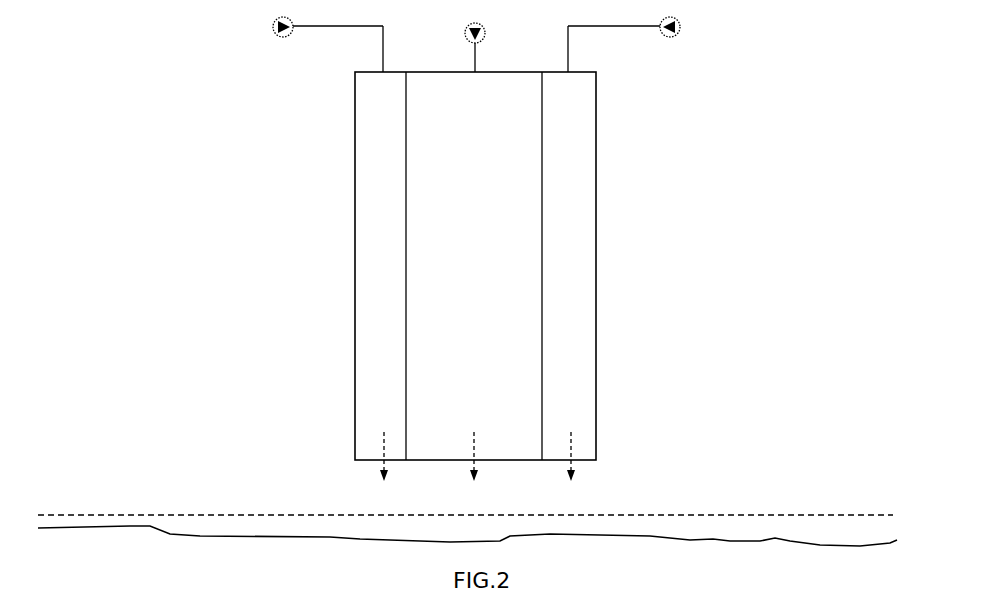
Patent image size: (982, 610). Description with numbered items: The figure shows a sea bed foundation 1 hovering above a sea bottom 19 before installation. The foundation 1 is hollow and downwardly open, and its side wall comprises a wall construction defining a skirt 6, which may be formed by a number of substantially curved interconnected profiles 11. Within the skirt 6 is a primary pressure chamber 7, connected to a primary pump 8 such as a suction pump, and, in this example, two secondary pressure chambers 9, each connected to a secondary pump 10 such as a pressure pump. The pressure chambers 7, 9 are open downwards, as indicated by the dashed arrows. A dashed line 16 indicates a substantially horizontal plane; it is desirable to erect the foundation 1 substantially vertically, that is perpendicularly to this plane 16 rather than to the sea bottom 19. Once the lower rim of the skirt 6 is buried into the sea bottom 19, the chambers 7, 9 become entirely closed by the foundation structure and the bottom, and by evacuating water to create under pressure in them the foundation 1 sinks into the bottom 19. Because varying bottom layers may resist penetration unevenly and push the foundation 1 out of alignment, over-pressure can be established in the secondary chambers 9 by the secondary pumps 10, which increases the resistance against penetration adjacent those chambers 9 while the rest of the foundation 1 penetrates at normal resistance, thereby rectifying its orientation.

The sea bed foundation 1 is at (712, 219).
The skirt 6 is at (596, 260).
The primary pressure chamber 7 is at (474, 469).
The primary pump 8 is at (487, 33).
The secondary pressure chambers 9 is at (477, 469).
The secondary pumps 10 is at (283, 37).
The curved interconnected profiles 11 is at (571, 326).
The horizontal plane 16 is at (893, 515).
The sea bottom 19 is at (713, 539).